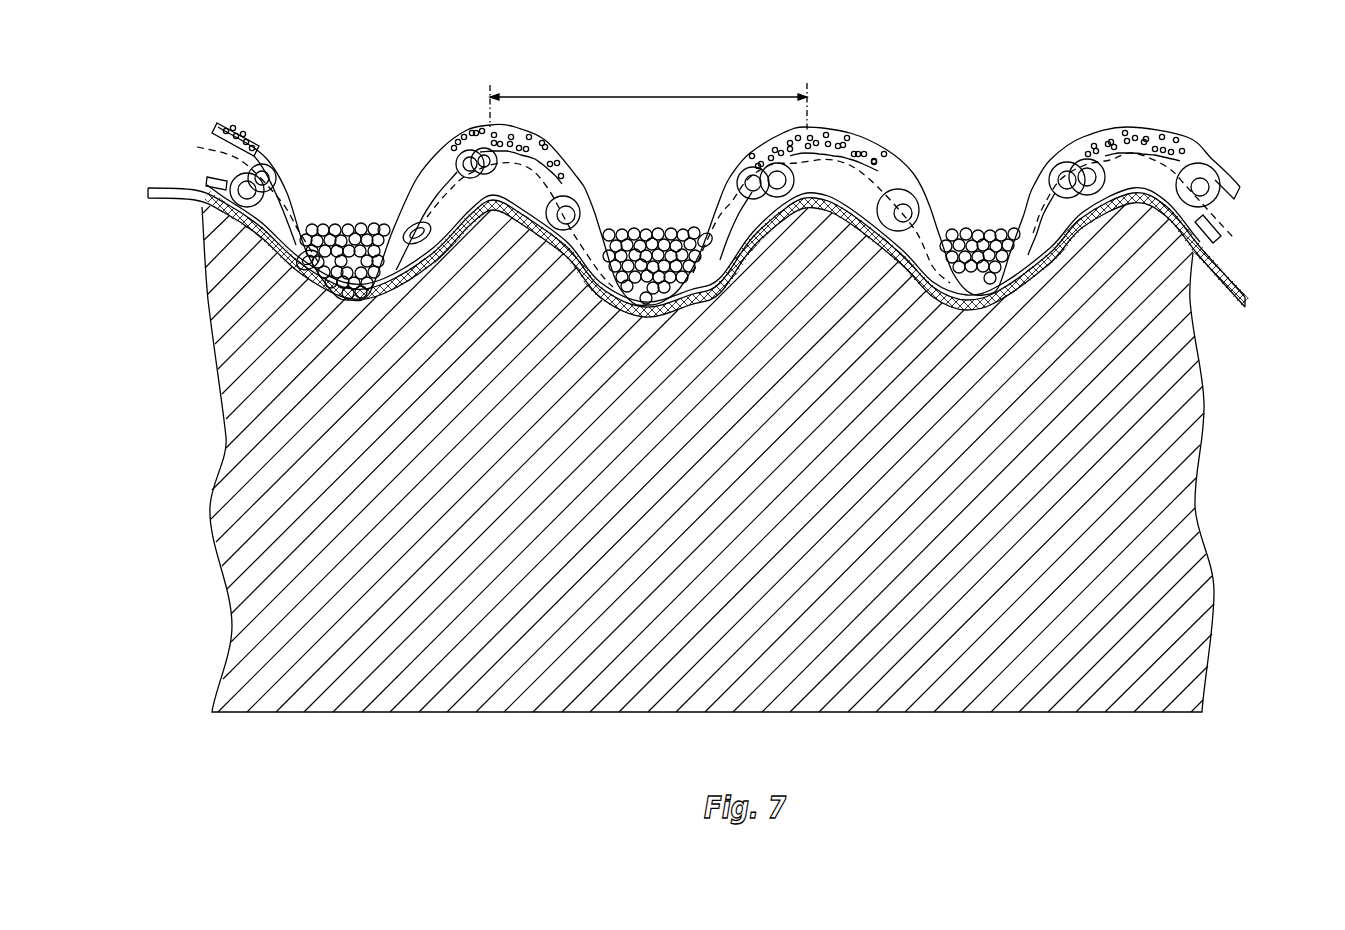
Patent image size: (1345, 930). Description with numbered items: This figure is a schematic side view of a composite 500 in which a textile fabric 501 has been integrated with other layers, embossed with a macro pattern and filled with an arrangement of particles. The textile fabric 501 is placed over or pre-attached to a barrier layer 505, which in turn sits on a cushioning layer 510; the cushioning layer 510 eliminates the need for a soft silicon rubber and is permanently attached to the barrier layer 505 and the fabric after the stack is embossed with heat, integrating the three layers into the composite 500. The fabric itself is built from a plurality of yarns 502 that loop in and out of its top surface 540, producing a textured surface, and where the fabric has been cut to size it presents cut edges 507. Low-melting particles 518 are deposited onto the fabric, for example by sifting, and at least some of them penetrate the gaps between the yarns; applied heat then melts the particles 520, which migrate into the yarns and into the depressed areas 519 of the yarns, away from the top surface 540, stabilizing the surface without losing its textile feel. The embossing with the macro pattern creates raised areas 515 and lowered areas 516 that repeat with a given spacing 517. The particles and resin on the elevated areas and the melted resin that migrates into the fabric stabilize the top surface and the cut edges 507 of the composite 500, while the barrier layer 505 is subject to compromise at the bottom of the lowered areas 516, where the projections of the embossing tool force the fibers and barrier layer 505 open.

The composite 500 is at (145, 59).
The textile fabric 501 is at (407, 228).
The yarns 502 is at (207, 183).
The barrier layer 505 is at (612, 320).
The cut edges 507 is at (218, 127).
The cushioning layer 510 is at (226, 437).
The raised areas 515 is at (484, 126).
The lowered areas 516 is at (357, 250).
The spacing 517 is at (648, 97).
The particles 518 is at (240, 128).
The depressed areas 519 is at (330, 232).
The melted particles 520 is at (507, 165).
The top surface 540 is at (467, 130).